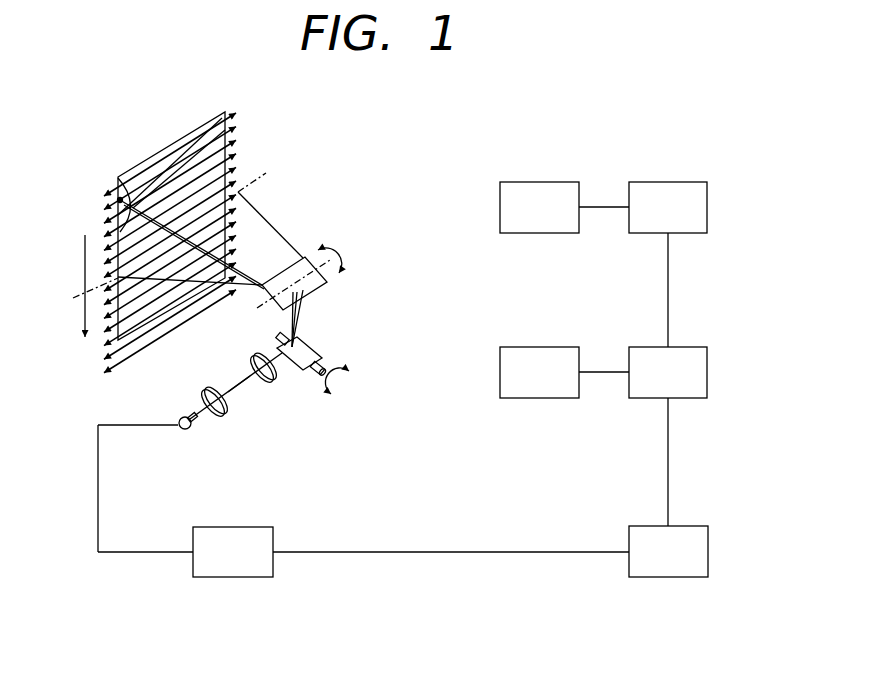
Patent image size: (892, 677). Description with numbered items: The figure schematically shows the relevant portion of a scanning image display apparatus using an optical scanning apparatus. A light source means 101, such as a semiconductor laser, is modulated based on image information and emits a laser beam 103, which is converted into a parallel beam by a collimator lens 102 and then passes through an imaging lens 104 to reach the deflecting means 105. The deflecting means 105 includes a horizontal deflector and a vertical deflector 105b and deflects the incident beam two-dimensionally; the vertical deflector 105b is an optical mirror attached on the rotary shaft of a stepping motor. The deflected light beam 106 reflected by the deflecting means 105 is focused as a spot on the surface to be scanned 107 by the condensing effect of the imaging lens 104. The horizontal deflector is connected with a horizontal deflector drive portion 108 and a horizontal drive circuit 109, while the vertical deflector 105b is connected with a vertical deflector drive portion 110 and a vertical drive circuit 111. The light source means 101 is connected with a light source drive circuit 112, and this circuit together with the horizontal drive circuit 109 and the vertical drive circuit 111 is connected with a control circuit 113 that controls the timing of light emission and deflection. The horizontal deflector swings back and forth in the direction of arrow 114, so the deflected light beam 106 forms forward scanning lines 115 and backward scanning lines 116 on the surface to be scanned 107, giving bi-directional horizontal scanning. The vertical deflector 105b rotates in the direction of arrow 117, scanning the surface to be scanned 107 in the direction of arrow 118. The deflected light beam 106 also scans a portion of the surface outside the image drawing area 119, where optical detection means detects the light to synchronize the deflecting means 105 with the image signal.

The light source means 101 is at (190, 433).
The collimator lens 102 is at (226, 406).
The laser beam 103 is at (240, 384).
The imaging lens 104 is at (275, 388).
The deflecting means 105 is at (359, 316).
The vertical deflector 105b is at (318, 293).
The deflected light beam 106 is at (118, 198).
The surface to be scanned 107 is at (150, 158).
The horizontal deflector drive portion 108 is at (539, 372).
The horizontal drive circuit 109 is at (668, 372).
The vertical deflector drive portion 110 is at (539, 207).
The vertical drive circuit 111 is at (668, 207).
The light source drive circuit 112 is at (233, 552).
The control circuit 113 is at (668, 551).
The arrow 114 is at (336, 393).
The forward scanning lines 115 is at (183, 147).
The backward scanning lines 116 is at (237, 157).
The arrow 117 is at (336, 252).
The arrow 118 is at (85, 272).
The image drawing area 119 is at (203, 122).